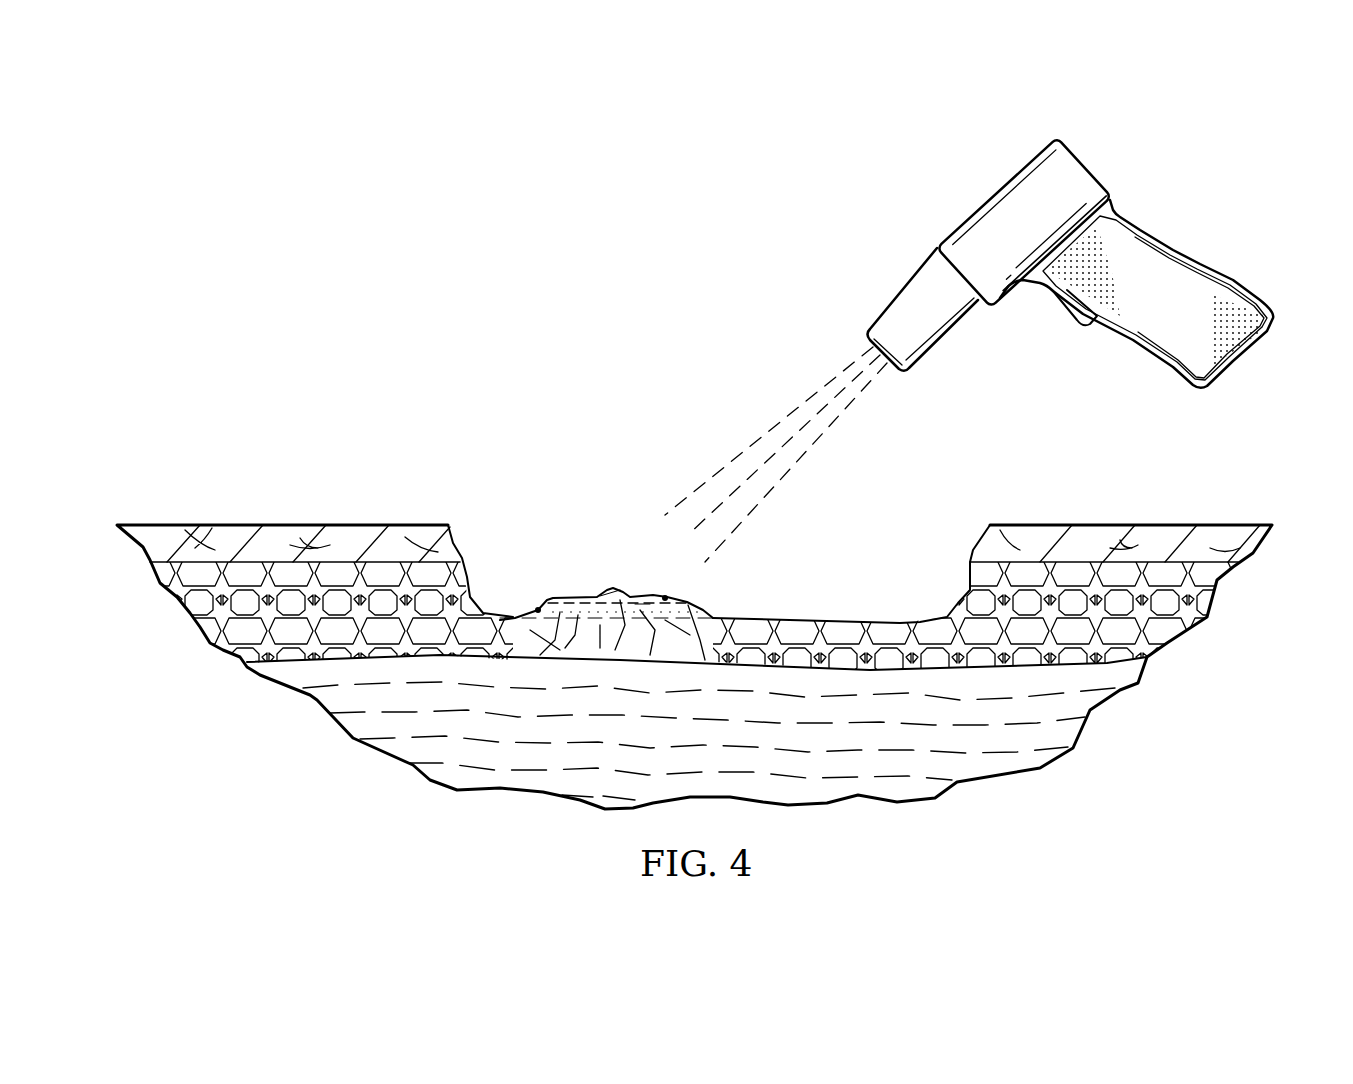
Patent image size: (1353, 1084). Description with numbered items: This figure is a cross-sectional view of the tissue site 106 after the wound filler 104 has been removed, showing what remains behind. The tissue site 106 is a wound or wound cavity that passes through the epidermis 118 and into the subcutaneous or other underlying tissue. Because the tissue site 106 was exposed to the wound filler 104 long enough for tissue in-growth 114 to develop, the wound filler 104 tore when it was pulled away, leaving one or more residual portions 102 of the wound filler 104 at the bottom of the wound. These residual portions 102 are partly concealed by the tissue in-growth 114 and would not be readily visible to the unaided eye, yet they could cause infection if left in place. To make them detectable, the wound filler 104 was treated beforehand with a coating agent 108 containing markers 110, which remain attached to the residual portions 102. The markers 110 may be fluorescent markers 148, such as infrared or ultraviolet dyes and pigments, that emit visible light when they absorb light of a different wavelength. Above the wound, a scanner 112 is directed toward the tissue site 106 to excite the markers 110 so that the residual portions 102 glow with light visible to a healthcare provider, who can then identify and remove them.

The scanner 112 is at (1092, 158).
The epidermis 118 is at (1156, 536).
The tissue site 106 is at (965, 605).
The wound filler 104 is at (555, 592).
The tissue in-growth 114 is at (593, 607).
The residual portions 102 is at (610, 590).
The coating agent 108 is at (642, 605).
The markers 110 is at (538, 610).
The fluorescent markers 148 is at (665, 598).